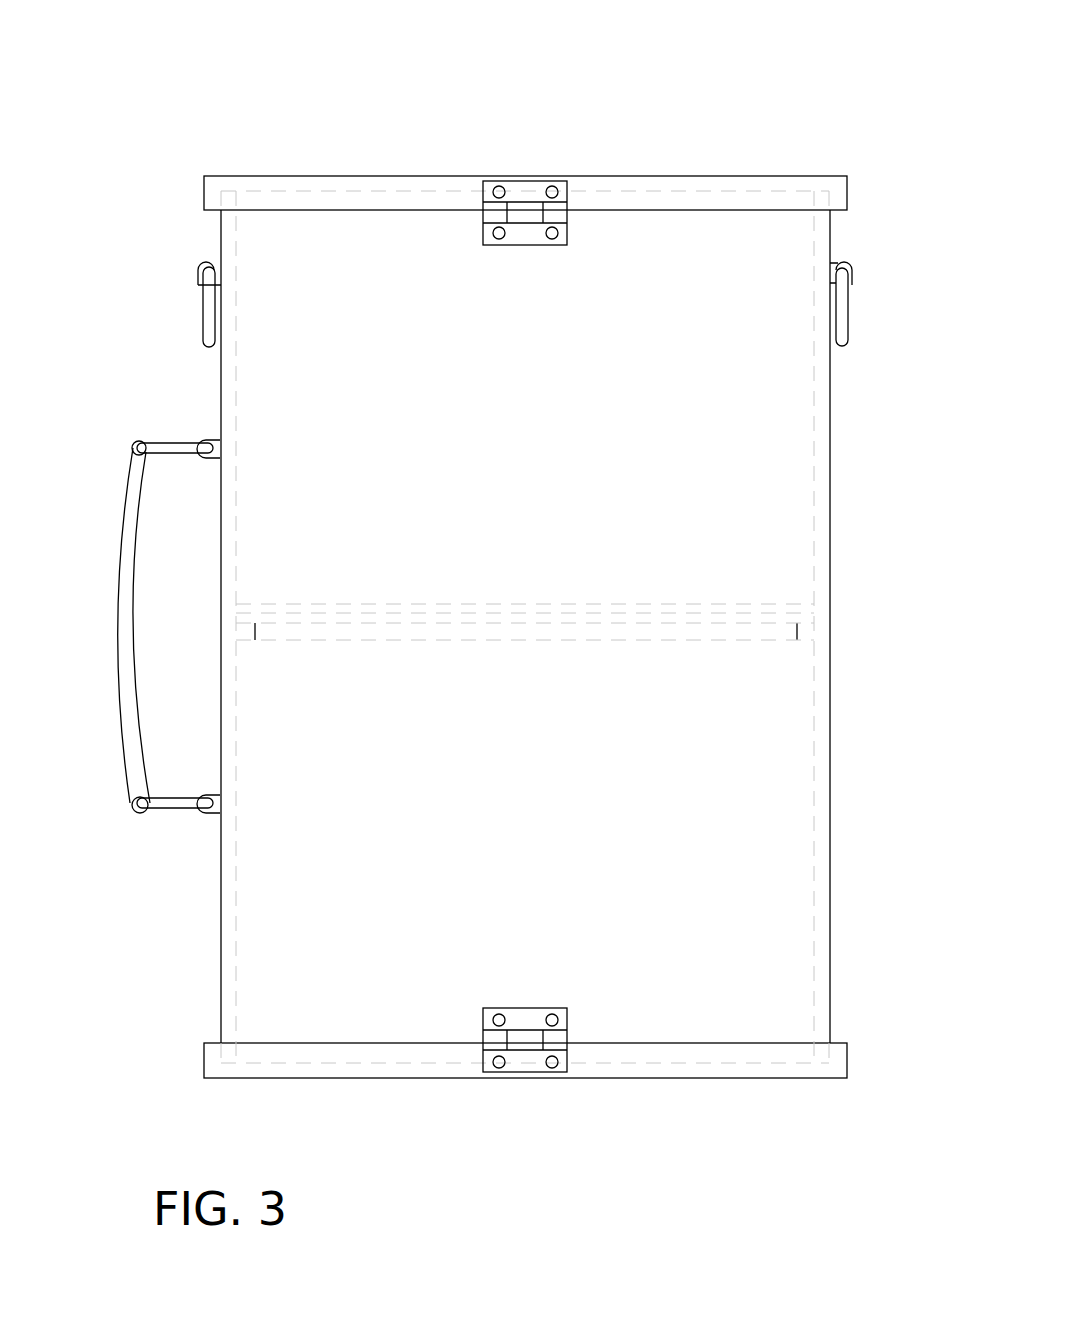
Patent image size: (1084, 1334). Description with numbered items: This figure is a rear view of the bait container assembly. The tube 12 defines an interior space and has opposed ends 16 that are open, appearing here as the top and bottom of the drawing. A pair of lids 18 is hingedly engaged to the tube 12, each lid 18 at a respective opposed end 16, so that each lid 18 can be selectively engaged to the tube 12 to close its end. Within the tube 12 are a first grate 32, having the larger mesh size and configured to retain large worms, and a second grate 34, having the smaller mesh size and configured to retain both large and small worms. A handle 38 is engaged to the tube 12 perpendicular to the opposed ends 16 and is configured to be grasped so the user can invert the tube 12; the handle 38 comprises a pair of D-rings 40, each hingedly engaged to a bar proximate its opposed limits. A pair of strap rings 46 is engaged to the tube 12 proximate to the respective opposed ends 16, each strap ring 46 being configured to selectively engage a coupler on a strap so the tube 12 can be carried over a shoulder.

The tube 12 is at (834, 873).
The opposed ends 16 is at (357, 1061).
The lids 18 is at (674, 1061).
The first grate 32 is at (795, 605).
The second grate 34 is at (792, 620).
The handle 38 is at (121, 682).
The D-rings 40 is at (180, 798).
The strap rings 46 is at (836, 300).